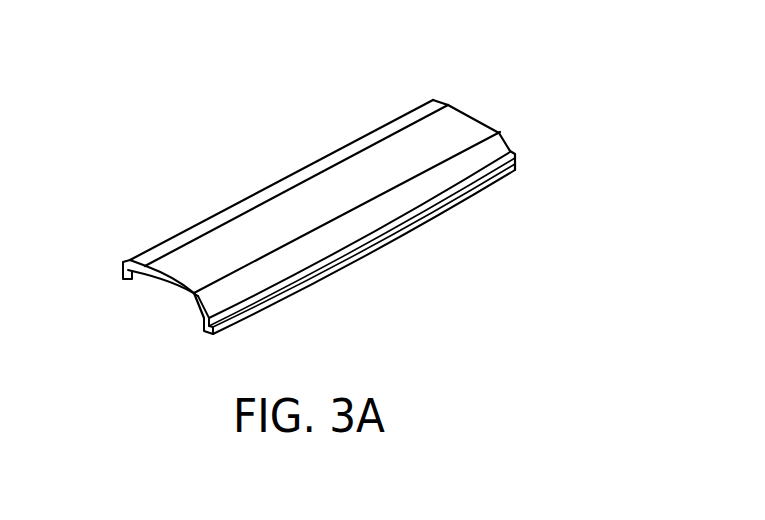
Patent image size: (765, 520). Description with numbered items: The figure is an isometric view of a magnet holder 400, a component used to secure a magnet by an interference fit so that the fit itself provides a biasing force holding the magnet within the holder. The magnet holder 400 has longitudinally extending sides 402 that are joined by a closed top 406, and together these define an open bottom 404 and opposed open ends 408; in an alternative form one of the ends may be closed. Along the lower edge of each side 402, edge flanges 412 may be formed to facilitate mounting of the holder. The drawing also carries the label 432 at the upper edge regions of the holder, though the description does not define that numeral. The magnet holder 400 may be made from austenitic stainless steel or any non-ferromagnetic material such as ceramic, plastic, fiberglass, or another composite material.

The magnet holder 400 is at (190, 198).
The longitudinally extending sides 402 is at (415, 208).
The open bottom 404 is at (150, 287).
The closed top 406 is at (462, 128).
The opposed open ends 408 is at (158, 332).
The edge flanges 412 is at (310, 280).
The end ledge 432 is at (398, 124).